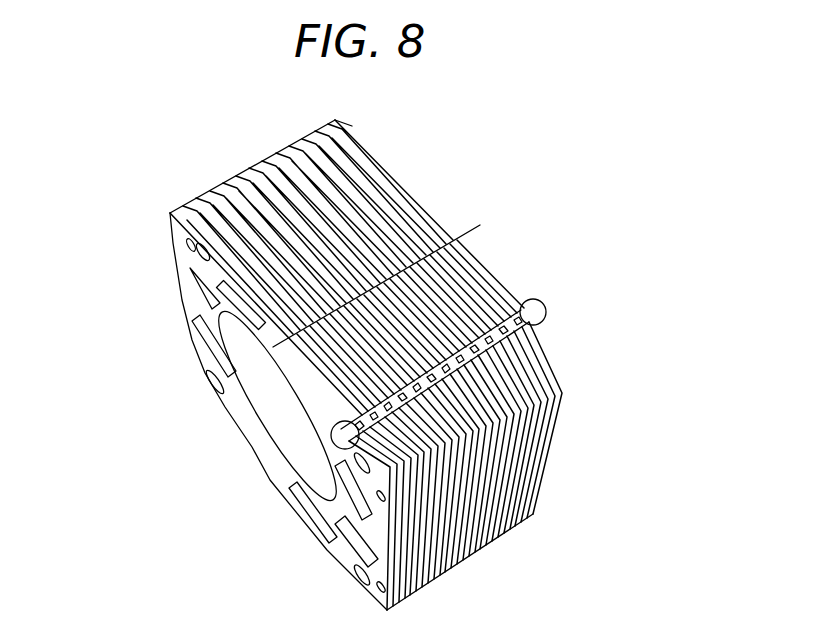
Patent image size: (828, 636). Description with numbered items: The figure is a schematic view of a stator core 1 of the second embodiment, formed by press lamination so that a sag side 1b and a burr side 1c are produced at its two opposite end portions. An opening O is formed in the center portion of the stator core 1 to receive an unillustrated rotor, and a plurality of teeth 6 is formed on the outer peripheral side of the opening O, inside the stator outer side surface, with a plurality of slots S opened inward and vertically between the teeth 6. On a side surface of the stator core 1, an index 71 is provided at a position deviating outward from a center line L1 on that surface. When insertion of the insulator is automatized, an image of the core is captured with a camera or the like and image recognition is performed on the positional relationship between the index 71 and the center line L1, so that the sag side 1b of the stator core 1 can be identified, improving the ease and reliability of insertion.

The stator core 1 is at (276, 182).
The sag side 1b is at (172, 220).
The burr side 1c is at (352, 128).
The center line L1 is at (466, 232).
The index 71 is at (542, 310).
The slot S is at (230, 290).
The tooth 6 is at (225, 325).
The opening O is at (277, 385).